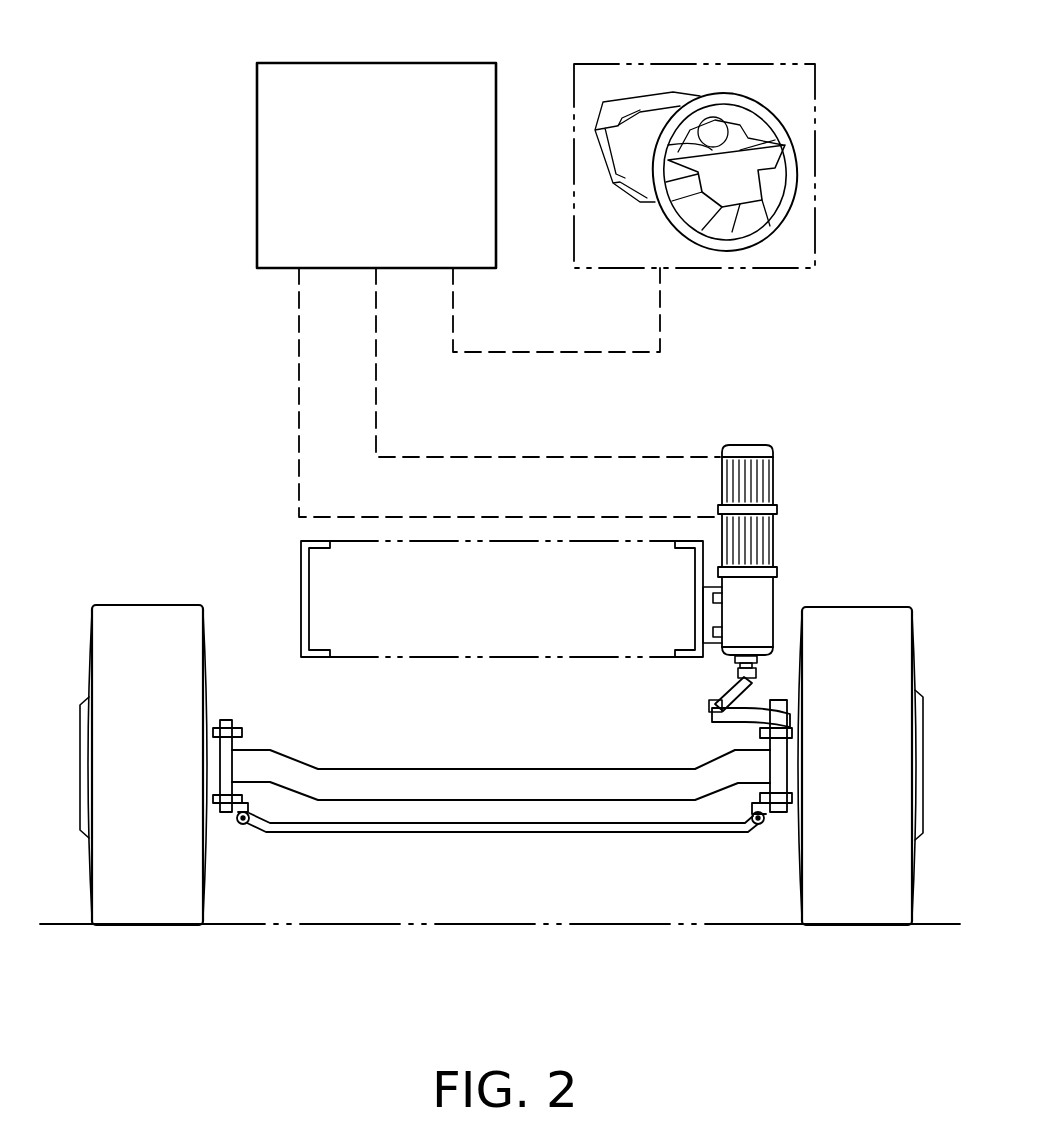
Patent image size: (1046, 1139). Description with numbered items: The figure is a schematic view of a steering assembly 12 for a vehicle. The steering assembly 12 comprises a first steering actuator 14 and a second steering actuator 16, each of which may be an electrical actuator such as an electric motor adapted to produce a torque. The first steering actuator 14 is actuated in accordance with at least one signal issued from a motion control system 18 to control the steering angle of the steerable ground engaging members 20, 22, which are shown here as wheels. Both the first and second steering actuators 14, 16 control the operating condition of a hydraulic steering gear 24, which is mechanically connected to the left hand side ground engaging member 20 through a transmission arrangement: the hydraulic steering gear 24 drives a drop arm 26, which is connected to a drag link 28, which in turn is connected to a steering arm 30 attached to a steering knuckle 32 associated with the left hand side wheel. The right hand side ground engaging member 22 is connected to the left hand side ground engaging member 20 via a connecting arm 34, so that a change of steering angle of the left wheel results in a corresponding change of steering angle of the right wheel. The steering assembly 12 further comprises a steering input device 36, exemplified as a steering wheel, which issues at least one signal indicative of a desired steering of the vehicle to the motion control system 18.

The steering assembly 12 is at (128, 124).
The first steering actuator 14 is at (773, 540).
The second steering actuator 16 is at (773, 480).
The motion control system 18 is at (375, 63).
The steerable ground engaging member 20 is at (895, 607).
The steerable ground engaging member 22 is at (143, 606).
The hydraulic steering gear 24 is at (773, 602).
The drop arm 26 is at (640, 835).
The drag link 28 is at (669, 863).
The steering arm 30 is at (721, 846).
The steering knuckle 32 is at (720, 910).
The connecting arm 34 is at (502, 903).
The steering input device 36 is at (740, 64).